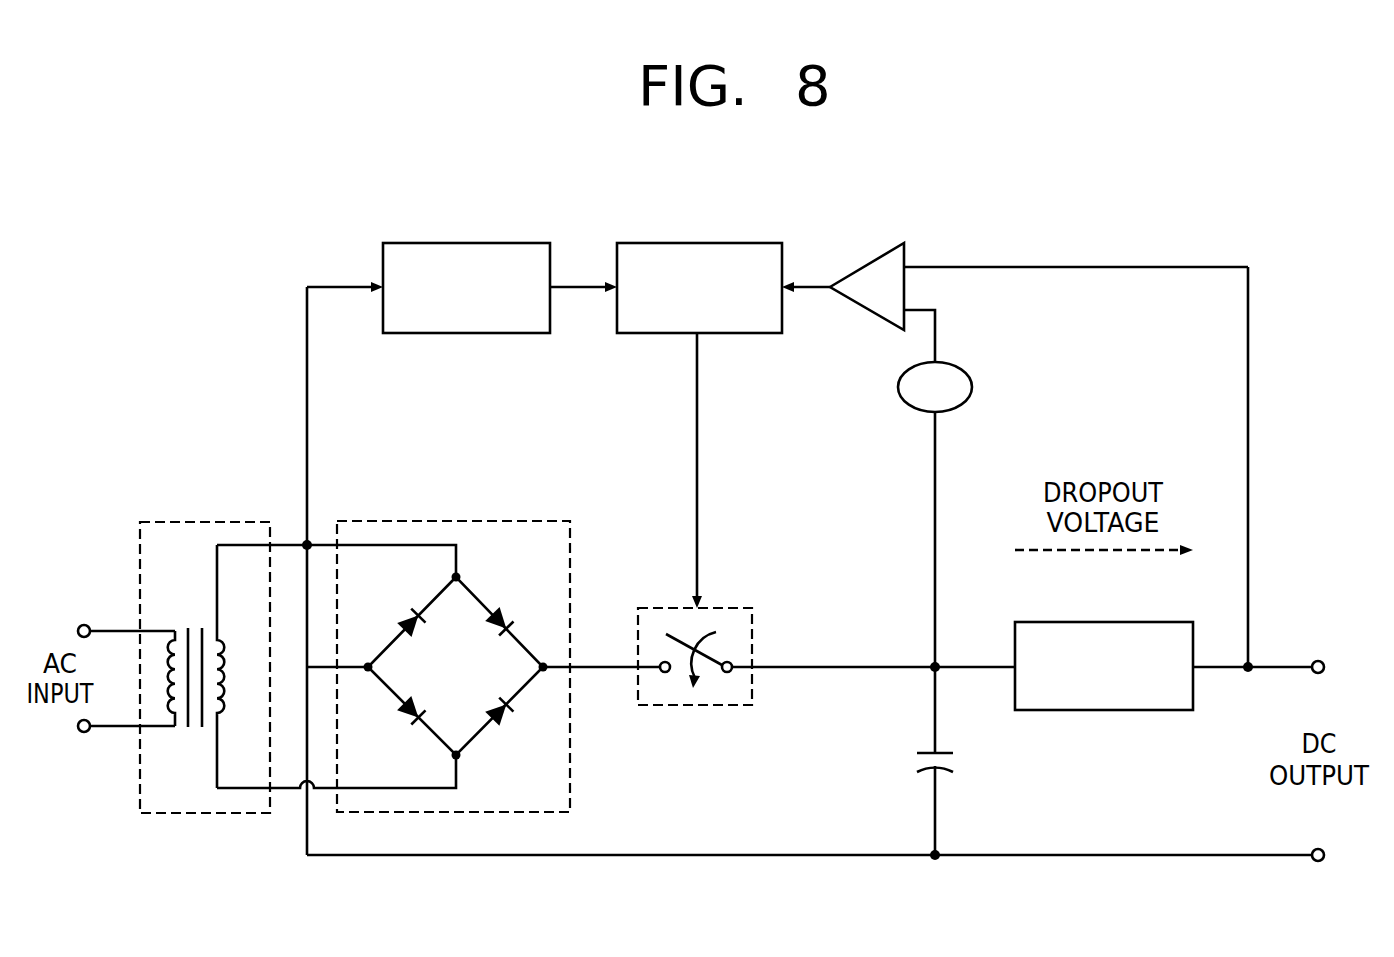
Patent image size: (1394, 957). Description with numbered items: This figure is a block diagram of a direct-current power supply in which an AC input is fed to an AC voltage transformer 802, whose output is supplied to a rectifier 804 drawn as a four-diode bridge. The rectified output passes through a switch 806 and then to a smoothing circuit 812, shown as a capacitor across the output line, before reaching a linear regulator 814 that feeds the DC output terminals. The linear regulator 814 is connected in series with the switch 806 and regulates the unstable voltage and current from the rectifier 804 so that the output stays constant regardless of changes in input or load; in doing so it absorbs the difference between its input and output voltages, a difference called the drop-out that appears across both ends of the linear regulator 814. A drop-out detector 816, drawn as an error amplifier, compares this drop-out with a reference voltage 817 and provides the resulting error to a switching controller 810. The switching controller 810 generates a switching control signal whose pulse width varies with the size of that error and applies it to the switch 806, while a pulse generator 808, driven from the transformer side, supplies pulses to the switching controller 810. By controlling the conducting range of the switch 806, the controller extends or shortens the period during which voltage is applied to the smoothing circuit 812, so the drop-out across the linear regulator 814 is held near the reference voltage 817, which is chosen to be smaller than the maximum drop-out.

The AC voltage transformer 802 is at (203, 522).
The rectifier 804 is at (458, 521).
The switch 806 is at (723, 608).
The pulse generator 808 is at (470, 243).
The switching controller 810 is at (705, 243).
The smoothing circuit 812 is at (954, 763).
The linear regulator 814 is at (1107, 622).
The drop-out detector 816 is at (908, 238).
The reference voltage 817 is at (962, 364).